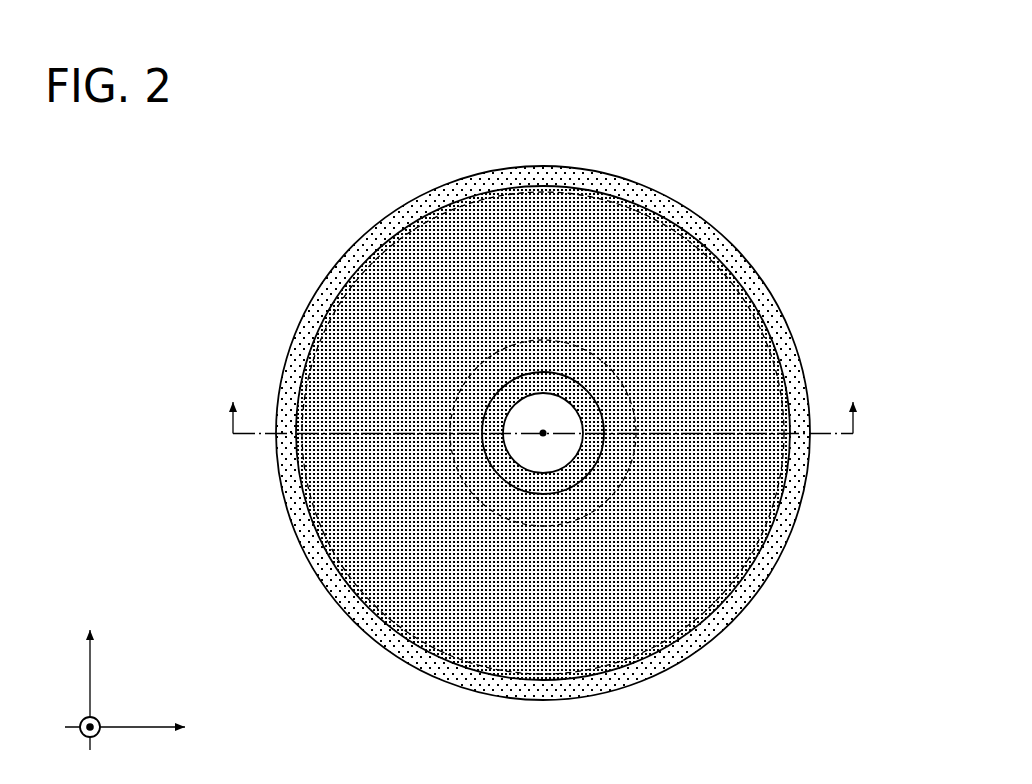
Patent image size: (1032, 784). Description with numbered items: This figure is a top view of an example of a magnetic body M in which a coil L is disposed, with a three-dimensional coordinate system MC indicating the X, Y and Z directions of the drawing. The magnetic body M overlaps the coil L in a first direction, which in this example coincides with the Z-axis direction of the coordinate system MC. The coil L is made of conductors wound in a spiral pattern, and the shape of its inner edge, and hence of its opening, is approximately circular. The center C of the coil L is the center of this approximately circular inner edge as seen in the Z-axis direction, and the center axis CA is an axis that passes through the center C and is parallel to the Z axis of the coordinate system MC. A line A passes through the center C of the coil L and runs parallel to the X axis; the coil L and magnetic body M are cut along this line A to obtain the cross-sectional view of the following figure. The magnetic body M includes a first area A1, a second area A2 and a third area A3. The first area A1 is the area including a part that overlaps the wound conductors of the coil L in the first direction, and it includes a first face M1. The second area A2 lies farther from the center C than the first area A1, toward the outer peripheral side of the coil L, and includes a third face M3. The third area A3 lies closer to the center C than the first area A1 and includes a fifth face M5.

The first area A1 is at (543, 401).
The first face M1 is at (612, 228).
The magnetic body M is at (737, 247).
The second area A2 is at (589, 433).
The third face M3 is at (589, 433).
The coil L is at (775, 348).
The third area A3 is at (575, 396).
The fifth face M5 is at (564, 384).
The center of the coil C is at (625, 387).
The center axis CA is at (549, 428).
The three-dimensional coordinate system MC is at (110, 707).
The line A is at (543, 401).